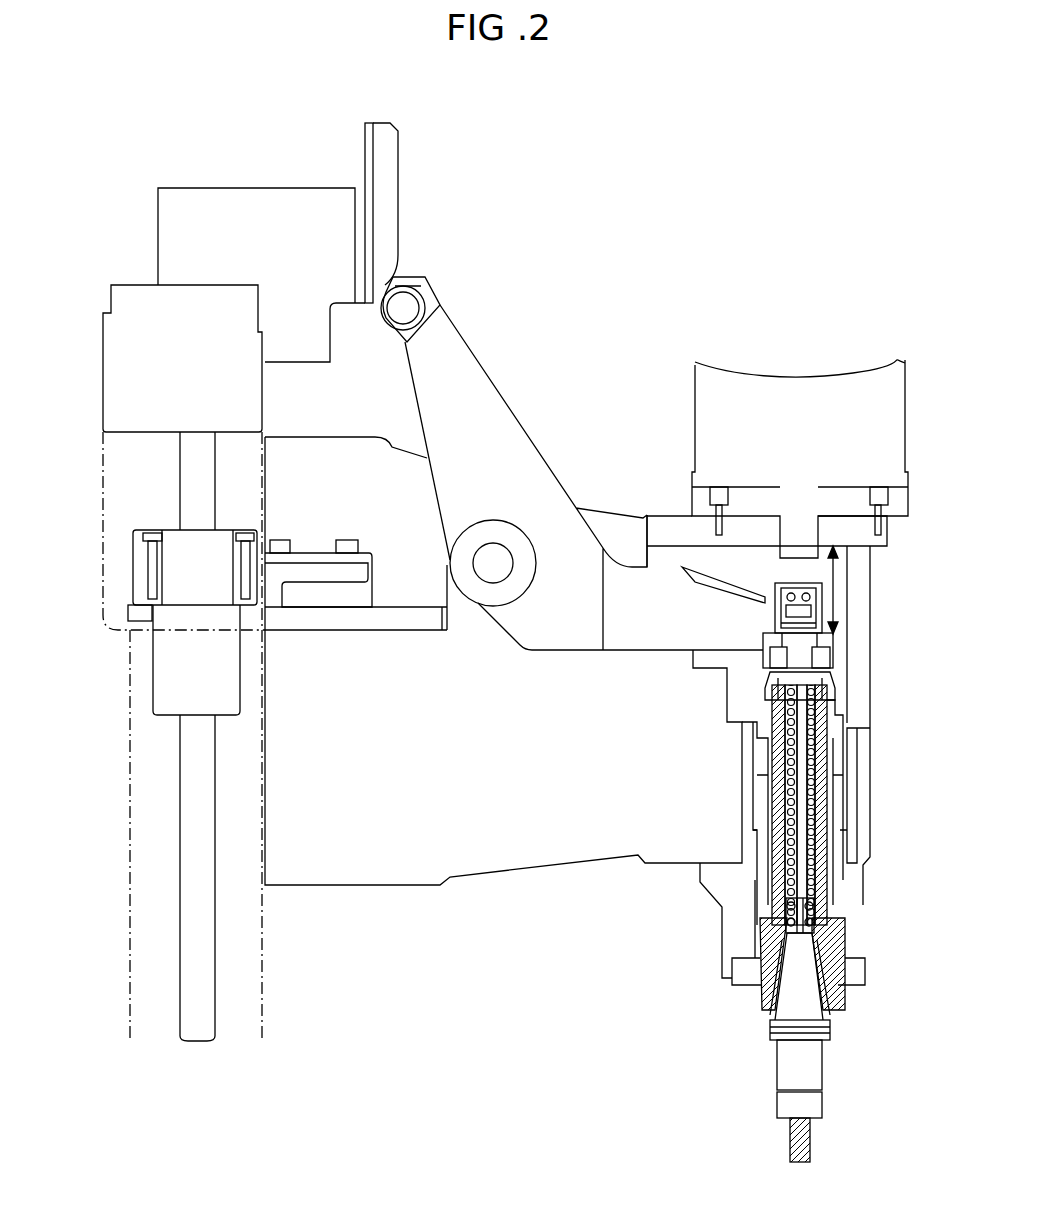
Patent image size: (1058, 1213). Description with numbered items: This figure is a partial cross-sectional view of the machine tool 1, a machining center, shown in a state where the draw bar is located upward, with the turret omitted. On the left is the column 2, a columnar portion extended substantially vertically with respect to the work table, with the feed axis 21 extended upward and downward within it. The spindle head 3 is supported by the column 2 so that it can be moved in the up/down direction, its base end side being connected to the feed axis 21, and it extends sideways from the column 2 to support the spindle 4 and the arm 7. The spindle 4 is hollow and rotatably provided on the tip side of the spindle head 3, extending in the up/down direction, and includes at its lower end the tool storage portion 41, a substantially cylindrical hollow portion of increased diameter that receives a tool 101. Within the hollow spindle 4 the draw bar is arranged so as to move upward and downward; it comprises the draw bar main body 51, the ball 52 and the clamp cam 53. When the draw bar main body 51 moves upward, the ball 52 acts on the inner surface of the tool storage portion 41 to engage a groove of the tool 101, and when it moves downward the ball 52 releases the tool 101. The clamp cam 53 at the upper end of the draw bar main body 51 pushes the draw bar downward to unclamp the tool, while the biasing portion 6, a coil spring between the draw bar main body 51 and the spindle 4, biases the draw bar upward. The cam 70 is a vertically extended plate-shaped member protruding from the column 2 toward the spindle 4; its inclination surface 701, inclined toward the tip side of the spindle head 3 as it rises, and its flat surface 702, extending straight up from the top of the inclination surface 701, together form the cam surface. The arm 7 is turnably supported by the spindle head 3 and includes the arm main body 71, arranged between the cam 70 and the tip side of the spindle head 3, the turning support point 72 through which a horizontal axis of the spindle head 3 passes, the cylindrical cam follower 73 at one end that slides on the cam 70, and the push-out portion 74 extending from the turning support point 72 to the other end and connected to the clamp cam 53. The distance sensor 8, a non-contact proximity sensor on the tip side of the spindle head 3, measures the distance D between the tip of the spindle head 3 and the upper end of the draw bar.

The machine tool 1 is at (812, 128).
The column 2 is at (132, 977).
The feed axis 21 is at (210, 960).
The spindle head 3 is at (363, 872).
The spindle 4 is at (828, 965).
The tool storage portion 41 is at (788, 992).
The draw bar main body 51 is at (833, 676).
The ball 52 is at (812, 920).
The clamp cam 53 is at (772, 608).
The biasing portion 6 is at (815, 708).
The arm 7 is at (576, 576).
The cam 70 is at (456, 213).
The inclination surface 701 is at (398, 265).
The flat surface 702 is at (398, 203).
The arm main body 71 is at (470, 348).
The turning support point 72 is at (482, 578).
The cam follower 73 is at (416, 292).
The push-out portion 74 is at (772, 622).
The distance sensor 8 is at (872, 541).
The tool 101 is at (820, 1075).
The distance D is at (848, 595).